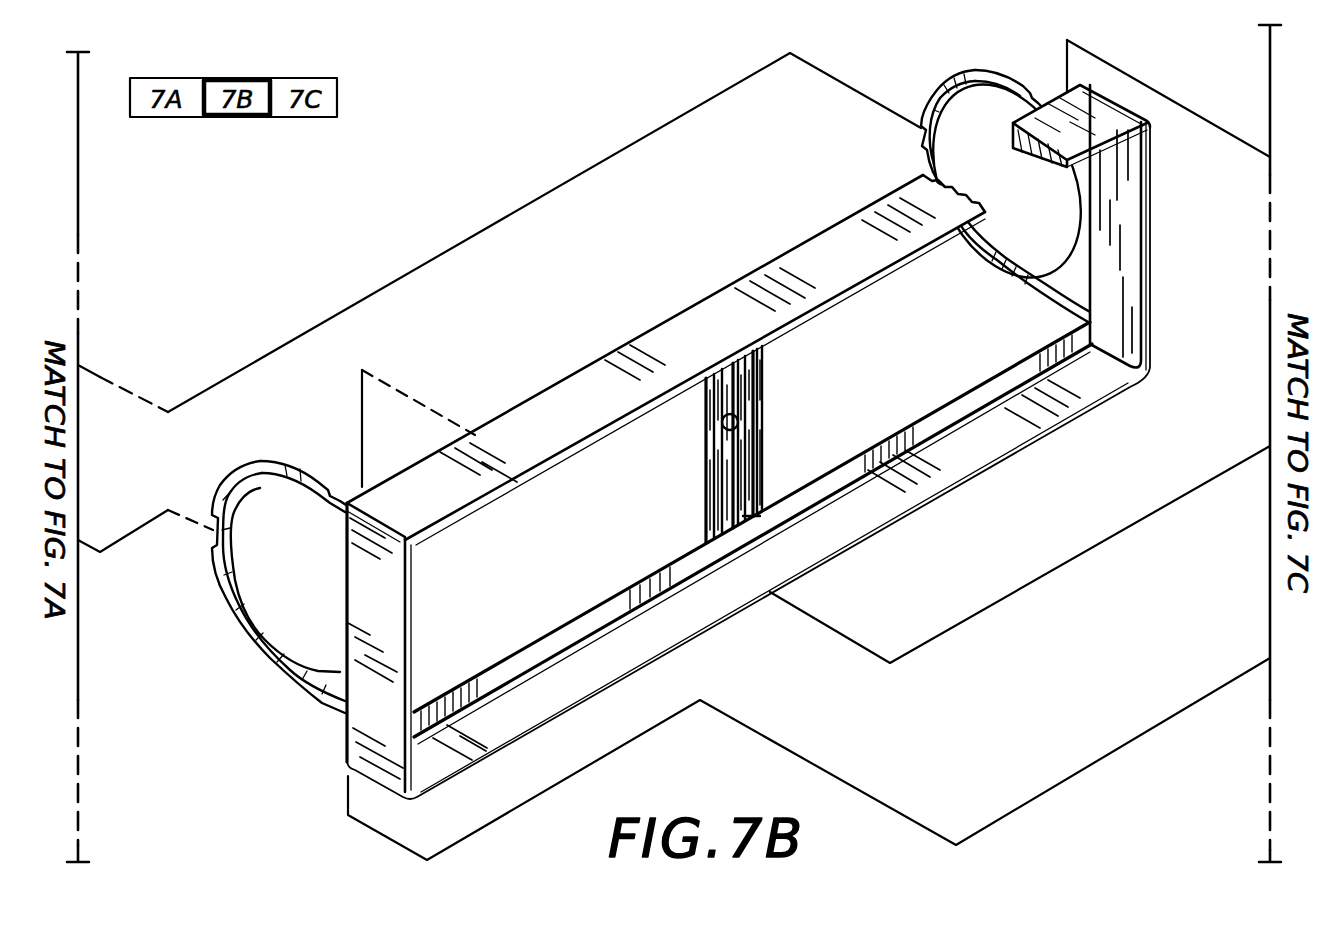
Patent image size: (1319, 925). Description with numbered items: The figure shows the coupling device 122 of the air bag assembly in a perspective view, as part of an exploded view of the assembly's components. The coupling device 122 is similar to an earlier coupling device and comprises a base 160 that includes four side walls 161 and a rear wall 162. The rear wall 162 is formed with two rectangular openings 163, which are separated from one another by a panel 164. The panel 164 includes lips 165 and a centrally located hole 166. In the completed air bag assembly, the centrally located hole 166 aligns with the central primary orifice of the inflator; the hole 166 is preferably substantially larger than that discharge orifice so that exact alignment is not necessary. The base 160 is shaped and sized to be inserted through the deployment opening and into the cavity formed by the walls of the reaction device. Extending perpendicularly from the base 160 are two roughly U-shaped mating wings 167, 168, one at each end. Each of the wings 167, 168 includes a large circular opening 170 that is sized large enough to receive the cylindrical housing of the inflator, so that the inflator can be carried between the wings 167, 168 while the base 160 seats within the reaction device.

The coupling device 122 is at (705, 225).
The base 160 is at (1162, 296).
The side walls 161 is at (376, 700).
The rear wall 162 is at (925, 425).
The rectangular openings 163 is at (525, 616).
The panel 164 is at (752, 375).
The lips 165 is at (712, 488).
The centrally located hole 166 is at (722, 425).
The wing 167 is at (300, 472).
The wing 168 is at (937, 73).
The circular opening 170 is at (273, 548).